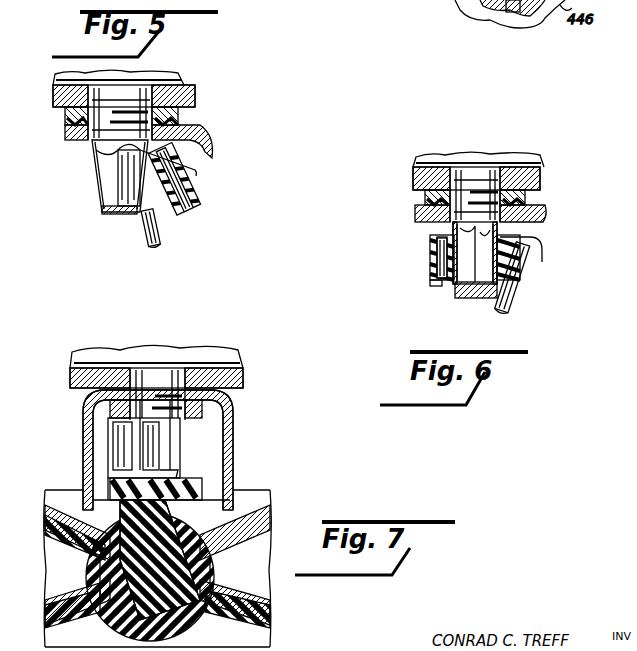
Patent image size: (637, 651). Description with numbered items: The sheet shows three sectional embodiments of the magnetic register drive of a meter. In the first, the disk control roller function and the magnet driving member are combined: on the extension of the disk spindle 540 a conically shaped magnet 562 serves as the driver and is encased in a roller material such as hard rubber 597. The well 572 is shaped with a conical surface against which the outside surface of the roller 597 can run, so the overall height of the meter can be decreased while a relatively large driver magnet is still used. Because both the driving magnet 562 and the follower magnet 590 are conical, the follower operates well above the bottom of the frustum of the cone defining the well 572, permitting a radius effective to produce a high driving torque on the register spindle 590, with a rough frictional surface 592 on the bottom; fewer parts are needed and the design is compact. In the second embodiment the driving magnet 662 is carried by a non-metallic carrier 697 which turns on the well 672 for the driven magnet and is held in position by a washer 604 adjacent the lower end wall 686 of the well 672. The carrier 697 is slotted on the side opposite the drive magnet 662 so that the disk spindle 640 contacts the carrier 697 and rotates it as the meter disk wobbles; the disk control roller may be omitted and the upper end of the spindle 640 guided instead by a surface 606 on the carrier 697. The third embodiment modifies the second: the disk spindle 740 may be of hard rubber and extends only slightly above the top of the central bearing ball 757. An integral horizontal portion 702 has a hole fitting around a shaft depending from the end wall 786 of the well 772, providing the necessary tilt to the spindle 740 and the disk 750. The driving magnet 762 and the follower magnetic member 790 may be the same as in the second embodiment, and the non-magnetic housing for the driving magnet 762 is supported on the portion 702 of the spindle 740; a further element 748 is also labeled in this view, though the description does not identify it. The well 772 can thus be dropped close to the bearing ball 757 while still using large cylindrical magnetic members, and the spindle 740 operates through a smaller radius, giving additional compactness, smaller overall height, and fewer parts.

In FIG. 5, the disk spindle 540 is at (152, 244).
In FIG. 5, the conically shaped magnet 562 is at (178, 190).
In FIG. 5, the well 572 is at (100, 178).
In FIG. 5, the follower magnet 590 is at (120, 160).
In FIG. 5, the rough frictional surface 592 is at (103, 208).
In FIG. 5, the hard rubber 597 is at (197, 170).
In FIG. 6, the washer 604 is at (442, 285).
In FIG. 6, the surface 606 is at (528, 247).
In FIG. 6, the disk spindle 640 is at (522, 266).
In FIG. 6, the driving magnet 662 is at (432, 262).
In FIG. 6, the well 672 is at (455, 229).
In FIG. 6, the lower end wall 686 is at (470, 298).
In FIG. 6, the non-metallic carrier 697 is at (431, 248).
In FIG. 7, the integral horizontal portion 702 is at (110, 485).
In FIG. 7, the disk spindle 740 is at (212, 548).
In FIG. 7, the seal 748 is at (176, 480).
In FIG. 7, the disk 750 is at (268, 596).
In FIG. 7, the central bearing ball 757 is at (214, 580).
In FIG. 7, the driving magnet 762 is at (120, 440).
In FIG. 7, the well 772 is at (172, 430).
In FIG. 7, the end wall 786 is at (172, 470).
In FIG. 7, the follower magnetic member 790 is at (152, 440).